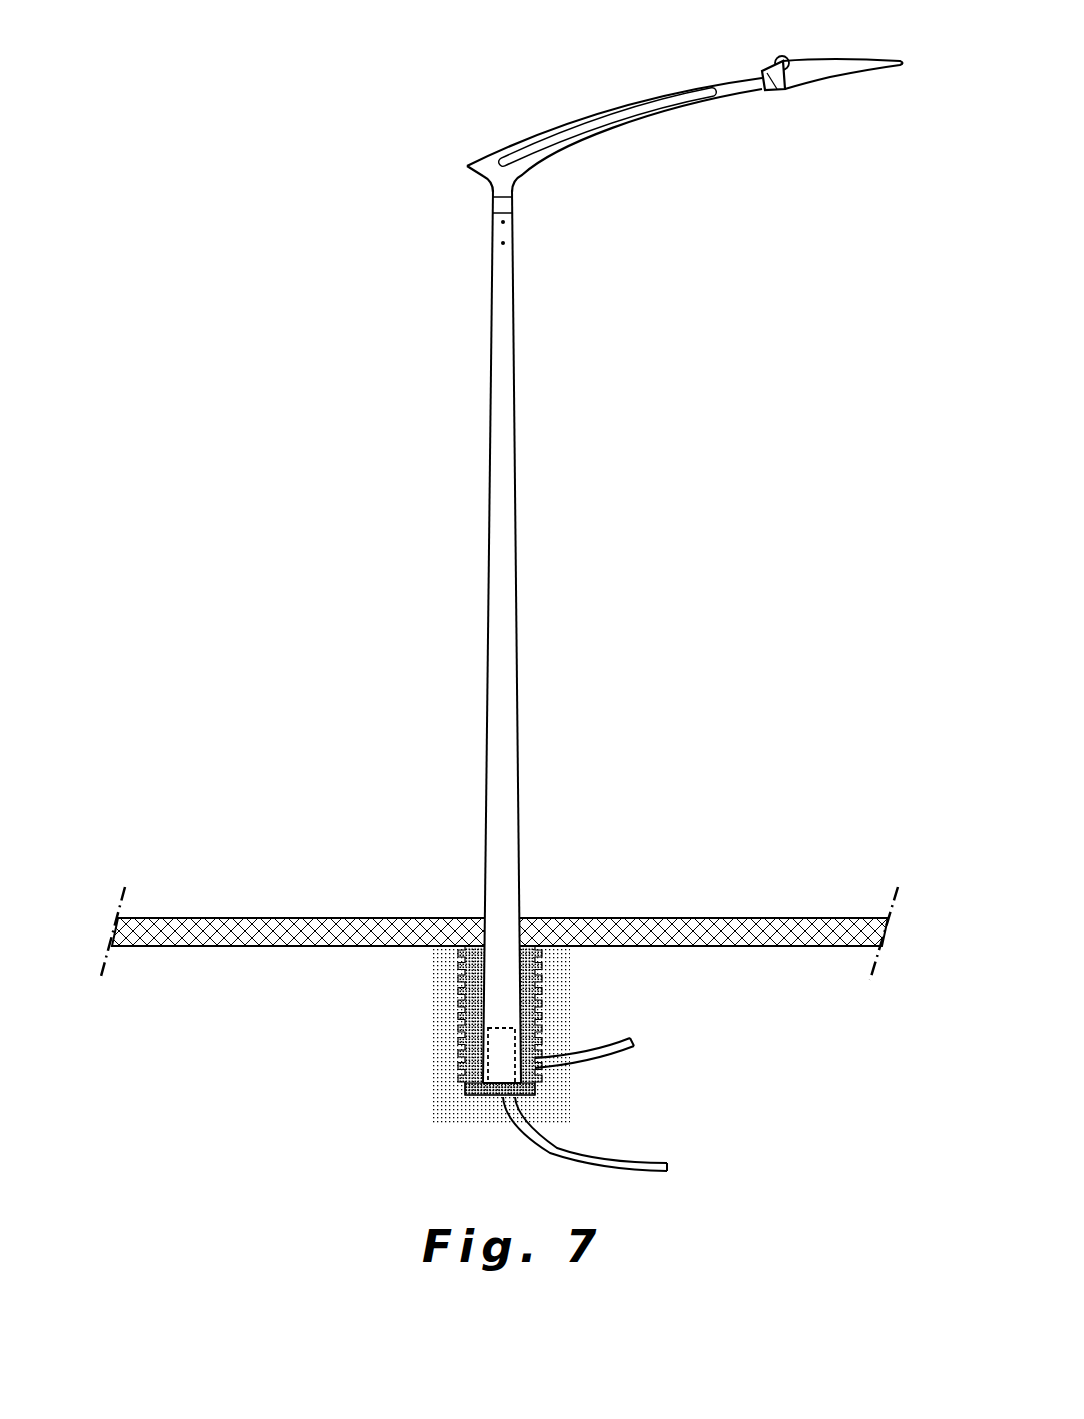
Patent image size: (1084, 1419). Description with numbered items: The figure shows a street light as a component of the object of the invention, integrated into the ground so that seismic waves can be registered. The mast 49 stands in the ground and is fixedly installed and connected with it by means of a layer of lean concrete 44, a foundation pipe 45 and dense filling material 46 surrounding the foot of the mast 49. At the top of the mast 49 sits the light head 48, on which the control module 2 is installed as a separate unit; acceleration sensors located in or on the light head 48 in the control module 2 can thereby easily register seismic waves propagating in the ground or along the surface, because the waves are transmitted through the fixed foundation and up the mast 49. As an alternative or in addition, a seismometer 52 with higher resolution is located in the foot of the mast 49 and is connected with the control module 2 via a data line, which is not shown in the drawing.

The control module 2 is at (777, 57).
The layer of lean concrete 44 is at (562, 999).
The foundation pipe 45 is at (458, 1013).
The dense filling material 46 is at (475, 1082).
The light head 48 is at (685, 96).
The mast 49 is at (502, 457).
The seismometer 52 is at (505, 1053).